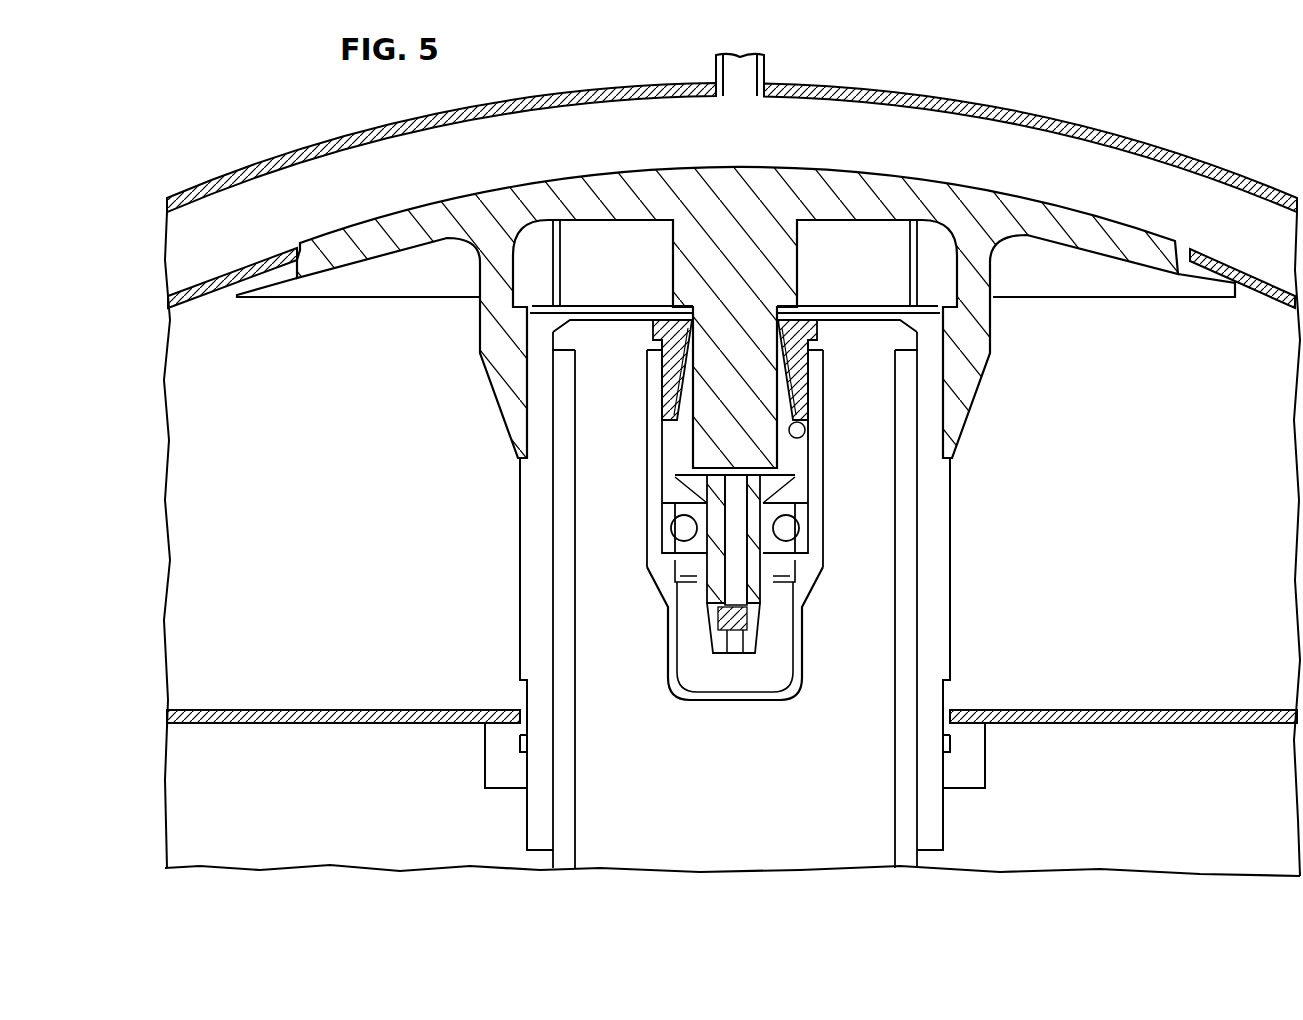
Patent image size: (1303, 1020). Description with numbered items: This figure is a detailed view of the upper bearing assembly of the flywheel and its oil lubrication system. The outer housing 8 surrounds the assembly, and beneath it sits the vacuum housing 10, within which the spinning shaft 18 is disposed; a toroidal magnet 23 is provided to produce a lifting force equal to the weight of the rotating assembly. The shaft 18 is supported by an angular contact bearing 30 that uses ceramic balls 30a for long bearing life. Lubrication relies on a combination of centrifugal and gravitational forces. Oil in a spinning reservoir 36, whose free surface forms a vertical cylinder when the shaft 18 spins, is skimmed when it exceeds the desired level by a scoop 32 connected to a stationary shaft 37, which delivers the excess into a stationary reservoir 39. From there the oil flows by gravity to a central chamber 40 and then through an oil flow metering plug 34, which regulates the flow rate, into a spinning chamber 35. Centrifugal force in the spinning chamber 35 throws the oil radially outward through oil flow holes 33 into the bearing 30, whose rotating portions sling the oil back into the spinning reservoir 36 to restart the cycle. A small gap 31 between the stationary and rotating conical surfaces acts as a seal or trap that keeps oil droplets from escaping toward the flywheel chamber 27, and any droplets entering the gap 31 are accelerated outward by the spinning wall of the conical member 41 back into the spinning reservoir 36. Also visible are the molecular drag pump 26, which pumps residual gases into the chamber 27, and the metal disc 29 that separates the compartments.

The outer housing 8 is at (983, 103).
The vacuum housing 10 is at (252, 262).
The shaft 18 is at (560, 382).
The toroidal magnet 23 is at (608, 240).
The molecular drag pump 26 is at (550, 505).
The flywheel chamber 27 is at (298, 517).
The metal disc 29 is at (352, 710).
The angular contact bearing 30 is at (806, 523).
The ceramic balls 30a is at (797, 548).
The small gap 31 is at (960, 380).
The scoop 32 is at (810, 427).
The oil flow holes 33 is at (800, 583).
The oil flow metering plug 34 is at (715, 640).
The spinning chamber 35 is at (770, 677).
The spinning reservoir 36 is at (668, 470).
The stationary shaft 37 is at (765, 70).
The stationary reservoir 39 is at (683, 445).
The central chamber 40 is at (707, 598).
The conical member 41 is at (680, 320).